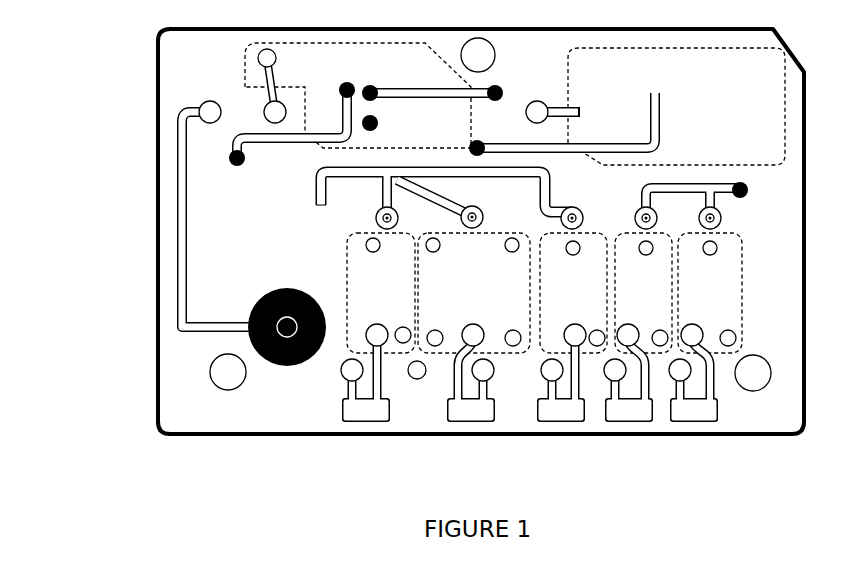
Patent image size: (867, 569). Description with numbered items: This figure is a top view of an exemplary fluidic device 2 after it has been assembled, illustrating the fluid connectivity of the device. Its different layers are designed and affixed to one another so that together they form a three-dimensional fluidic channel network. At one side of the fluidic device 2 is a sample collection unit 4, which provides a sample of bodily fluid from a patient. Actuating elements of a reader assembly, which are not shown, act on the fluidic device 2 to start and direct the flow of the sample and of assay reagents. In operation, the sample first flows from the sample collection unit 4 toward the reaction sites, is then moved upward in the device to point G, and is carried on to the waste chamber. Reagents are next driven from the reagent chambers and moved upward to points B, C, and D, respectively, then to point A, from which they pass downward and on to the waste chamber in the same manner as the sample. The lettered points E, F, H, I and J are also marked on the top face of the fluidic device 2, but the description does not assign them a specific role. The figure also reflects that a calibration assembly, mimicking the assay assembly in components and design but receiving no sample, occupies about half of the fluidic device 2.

The fluidic device 2 is at (110, 144).
The sample collection unit 4 is at (283, 366).
The point A is at (311, 202).
The point B is at (378, 218).
The point C is at (479, 217).
The point D is at (578, 218).
The pad E is at (637, 218).
The pad F is at (717, 218).
The point G is at (482, 141).
The pad H is at (750, 191).
The pad I is at (500, 94).
The pad J is at (228, 159).